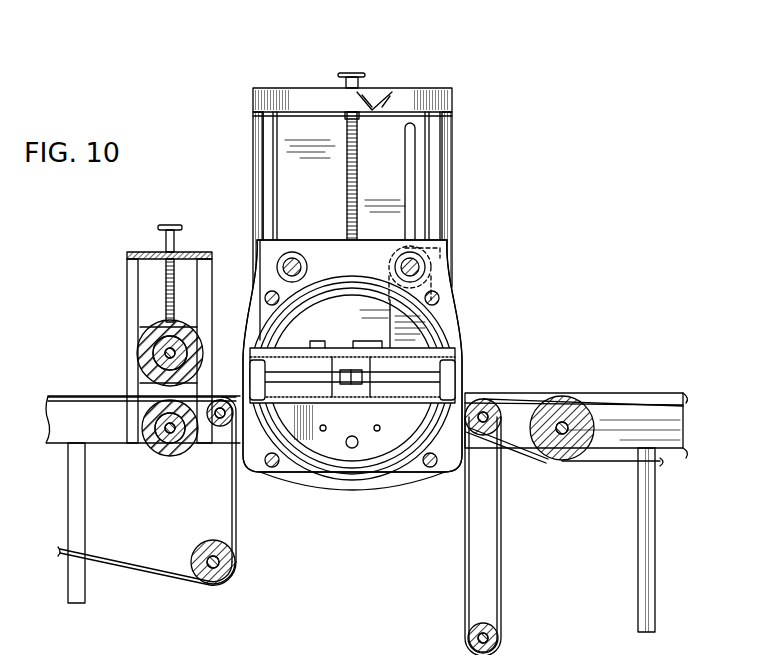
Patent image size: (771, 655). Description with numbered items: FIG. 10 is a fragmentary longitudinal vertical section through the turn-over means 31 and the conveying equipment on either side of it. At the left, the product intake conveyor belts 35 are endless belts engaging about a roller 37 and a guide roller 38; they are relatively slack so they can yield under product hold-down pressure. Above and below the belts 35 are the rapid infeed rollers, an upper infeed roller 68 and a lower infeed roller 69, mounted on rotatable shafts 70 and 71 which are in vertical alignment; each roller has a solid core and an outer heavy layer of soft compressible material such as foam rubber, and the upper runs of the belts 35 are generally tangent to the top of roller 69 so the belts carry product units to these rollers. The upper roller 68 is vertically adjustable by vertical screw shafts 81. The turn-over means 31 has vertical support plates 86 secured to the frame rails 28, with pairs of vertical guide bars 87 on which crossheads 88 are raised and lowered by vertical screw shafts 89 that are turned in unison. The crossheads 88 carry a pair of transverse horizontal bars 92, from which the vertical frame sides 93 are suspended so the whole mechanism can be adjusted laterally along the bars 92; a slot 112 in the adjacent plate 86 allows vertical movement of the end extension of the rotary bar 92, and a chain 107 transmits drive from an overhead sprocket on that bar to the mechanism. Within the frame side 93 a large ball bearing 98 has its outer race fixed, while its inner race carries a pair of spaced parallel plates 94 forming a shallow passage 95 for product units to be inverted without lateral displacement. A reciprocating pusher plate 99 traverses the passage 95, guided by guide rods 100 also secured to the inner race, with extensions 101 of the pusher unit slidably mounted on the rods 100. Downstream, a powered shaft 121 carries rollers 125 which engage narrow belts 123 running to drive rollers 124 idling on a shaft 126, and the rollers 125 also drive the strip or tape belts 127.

The frame rails 28 is at (58, 446).
The turn-over means 31 is at (462, 264).
The product intake conveyor belts 35 is at (68, 398).
The roller 37 is at (200, 546).
The guide roller 38 is at (214, 440).
The upper infeed roller 68 is at (142, 350).
The lower infeed roller 69 is at (176, 458).
The shaft 70 is at (150, 362).
The shaft 71 is at (152, 447).
The vertical screw shafts 81 is at (162, 292).
The vertical support plates 86 is at (446, 179).
The vertical guide bars 87 is at (262, 152).
The crossheads 88 is at (262, 256).
The vertical screw shafts 89 is at (347, 166).
The transverse horizontal bars 92 is at (293, 262).
The frame sides 93 is at (446, 323).
The parallel plates 94 is at (306, 397).
The passage 95 is at (428, 393).
The ball bearing 98 is at (318, 470).
The pusher plate 99 is at (372, 393).
The guide rods 100 is at (283, 378).
The extensions 101 is at (353, 383).
The chain 107 is at (432, 308).
The slot 112 is at (406, 176).
The shaft 121 is at (566, 412).
The narrow belts 123 is at (535, 396).
The drive rollers 124 is at (500, 442).
The rollers 125 is at (567, 462).
The shaft 126 is at (487, 404).
The strip or tape belts 127 is at (658, 400).